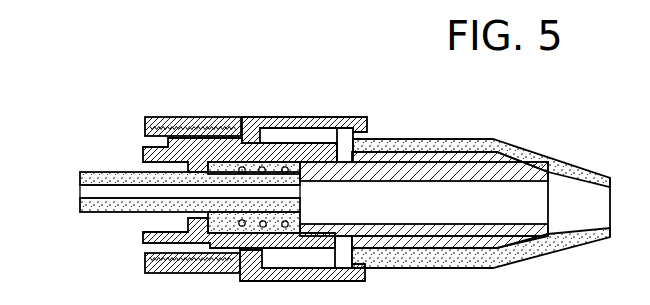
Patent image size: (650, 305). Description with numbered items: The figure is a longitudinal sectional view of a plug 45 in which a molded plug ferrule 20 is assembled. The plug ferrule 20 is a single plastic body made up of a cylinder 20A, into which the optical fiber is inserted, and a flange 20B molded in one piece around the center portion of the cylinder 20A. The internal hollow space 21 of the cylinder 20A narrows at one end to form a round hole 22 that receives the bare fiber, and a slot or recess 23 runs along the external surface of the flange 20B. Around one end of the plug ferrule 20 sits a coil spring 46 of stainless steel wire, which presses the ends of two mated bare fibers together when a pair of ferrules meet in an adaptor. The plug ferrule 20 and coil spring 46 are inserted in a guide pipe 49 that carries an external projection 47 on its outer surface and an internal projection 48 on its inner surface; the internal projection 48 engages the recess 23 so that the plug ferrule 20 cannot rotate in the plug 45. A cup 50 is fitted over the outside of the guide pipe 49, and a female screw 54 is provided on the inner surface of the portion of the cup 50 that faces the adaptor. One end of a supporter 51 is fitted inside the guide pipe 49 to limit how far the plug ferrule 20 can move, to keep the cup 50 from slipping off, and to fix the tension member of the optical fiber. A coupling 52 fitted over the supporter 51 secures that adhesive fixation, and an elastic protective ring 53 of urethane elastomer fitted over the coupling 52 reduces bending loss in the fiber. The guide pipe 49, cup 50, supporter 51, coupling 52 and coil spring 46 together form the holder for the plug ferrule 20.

The plug ferrule 20 is at (160, 211).
The cylinder 20A is at (98, 168).
The flange 20B is at (210, 220).
The internal hollow space 21 is at (110, 198).
The round hole 22 is at (90, 192).
The slot or recess 23 is at (213, 167).
The plug 45 is at (165, 76).
The coil spring 46 is at (272, 173).
The external projection 47 is at (185, 117).
The internal projection 48 is at (225, 160).
The guide pipe 49 is at (317, 150).
The cup 50 is at (357, 116).
The supporter 51 is at (410, 173).
The coupling 52 is at (523, 168).
The protective ring 53 is at (583, 172).
The female screw 54 is at (147, 138).